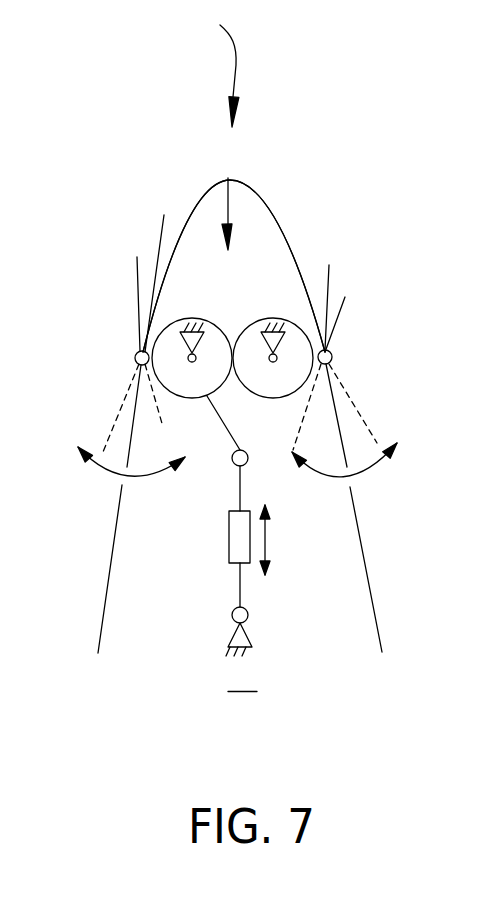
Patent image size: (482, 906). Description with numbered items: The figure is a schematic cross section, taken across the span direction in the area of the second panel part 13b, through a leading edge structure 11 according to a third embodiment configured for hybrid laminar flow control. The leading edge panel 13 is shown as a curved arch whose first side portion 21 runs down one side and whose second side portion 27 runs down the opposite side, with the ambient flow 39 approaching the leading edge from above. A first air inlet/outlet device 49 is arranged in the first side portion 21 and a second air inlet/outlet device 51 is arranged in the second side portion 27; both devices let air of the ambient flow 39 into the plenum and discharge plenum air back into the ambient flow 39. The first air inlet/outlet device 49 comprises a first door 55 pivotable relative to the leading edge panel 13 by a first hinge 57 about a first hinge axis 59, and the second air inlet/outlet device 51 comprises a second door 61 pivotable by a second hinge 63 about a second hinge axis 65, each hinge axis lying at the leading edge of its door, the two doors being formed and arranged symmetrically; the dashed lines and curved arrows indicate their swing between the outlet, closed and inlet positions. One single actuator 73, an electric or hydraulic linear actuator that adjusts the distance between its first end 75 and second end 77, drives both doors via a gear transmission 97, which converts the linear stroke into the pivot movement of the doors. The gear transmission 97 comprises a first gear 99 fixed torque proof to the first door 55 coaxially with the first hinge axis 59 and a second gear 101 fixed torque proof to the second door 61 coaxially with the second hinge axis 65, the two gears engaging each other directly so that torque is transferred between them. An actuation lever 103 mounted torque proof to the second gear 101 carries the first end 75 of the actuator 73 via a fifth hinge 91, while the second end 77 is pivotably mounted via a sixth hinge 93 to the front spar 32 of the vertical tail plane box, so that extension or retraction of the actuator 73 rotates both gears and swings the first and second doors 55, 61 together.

The leading edge structure 11 is at (150, 127).
The ambient flow 39 is at (238, 65).
The leading edge panel 13 is at (270, 210).
The second panel part 13b is at (234, 266).
The gear transmission 97 is at (228, 178).
The second hinge axis 65 is at (164, 215).
The second hinge 63 is at (137, 257).
The second air inlet/outlet device 51 is at (97, 318).
The second gear 101 is at (191, 318).
The first gear 99 is at (263, 319).
The first hinge axis 59 is at (329, 265).
The first hinge 57 is at (345, 297).
The first air inlet/outlet device 49 is at (392, 370).
The second door 61 is at (130, 430).
The first door 55 is at (342, 425).
The actuation lever 103 is at (227, 433).
The fifth hinge 91 is at (232, 463).
The first end 75 is at (242, 481).
The actuator 73 is at (235, 535).
The second end 77 is at (242, 597).
The sixth hinge 93 is at (233, 622).
The second side portion 27 is at (110, 562).
The first side portion 21 is at (364, 558).
The front spar 32 is at (242, 680).